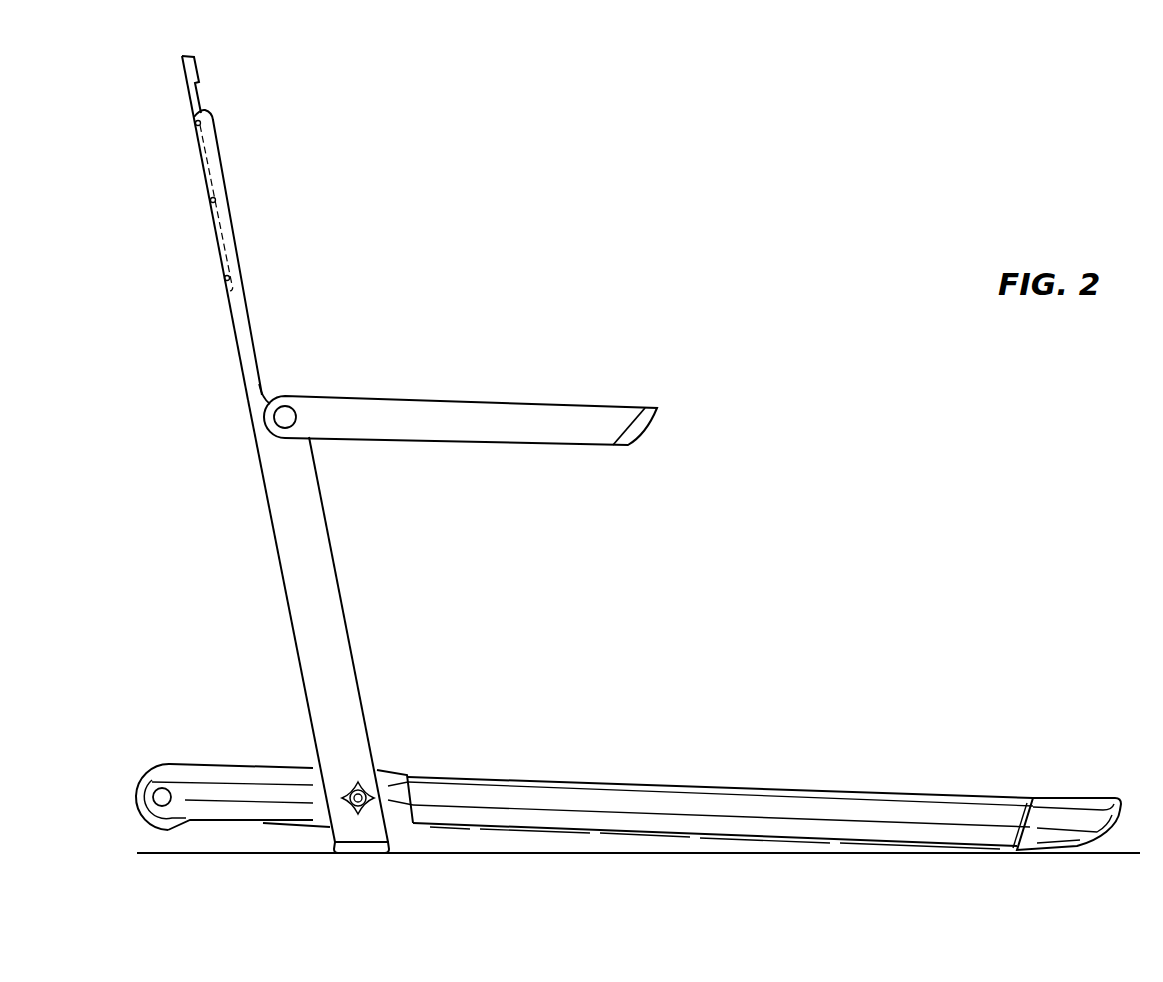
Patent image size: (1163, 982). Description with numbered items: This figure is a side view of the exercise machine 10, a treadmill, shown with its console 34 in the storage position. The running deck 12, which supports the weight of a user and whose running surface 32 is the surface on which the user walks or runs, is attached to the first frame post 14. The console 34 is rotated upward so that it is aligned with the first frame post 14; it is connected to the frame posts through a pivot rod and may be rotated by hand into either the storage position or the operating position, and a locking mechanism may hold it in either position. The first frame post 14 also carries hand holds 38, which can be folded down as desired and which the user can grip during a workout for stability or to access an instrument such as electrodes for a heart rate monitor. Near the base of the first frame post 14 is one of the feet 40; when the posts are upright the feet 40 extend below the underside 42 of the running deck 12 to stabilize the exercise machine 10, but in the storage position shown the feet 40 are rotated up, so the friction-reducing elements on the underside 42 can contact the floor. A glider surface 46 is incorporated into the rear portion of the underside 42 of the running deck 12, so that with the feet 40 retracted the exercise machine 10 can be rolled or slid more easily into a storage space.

The exercise machine 10 is at (652, 246).
The running deck 12 is at (752, 742).
The first frame post 14 is at (340, 630).
The running surface 32 is at (473, 772).
The console 34 is at (200, 100).
The hand holds 38 is at (477, 412).
The feet 40 is at (348, 848).
The underside 42 is at (632, 835).
The glider surface 46 is at (1045, 851).